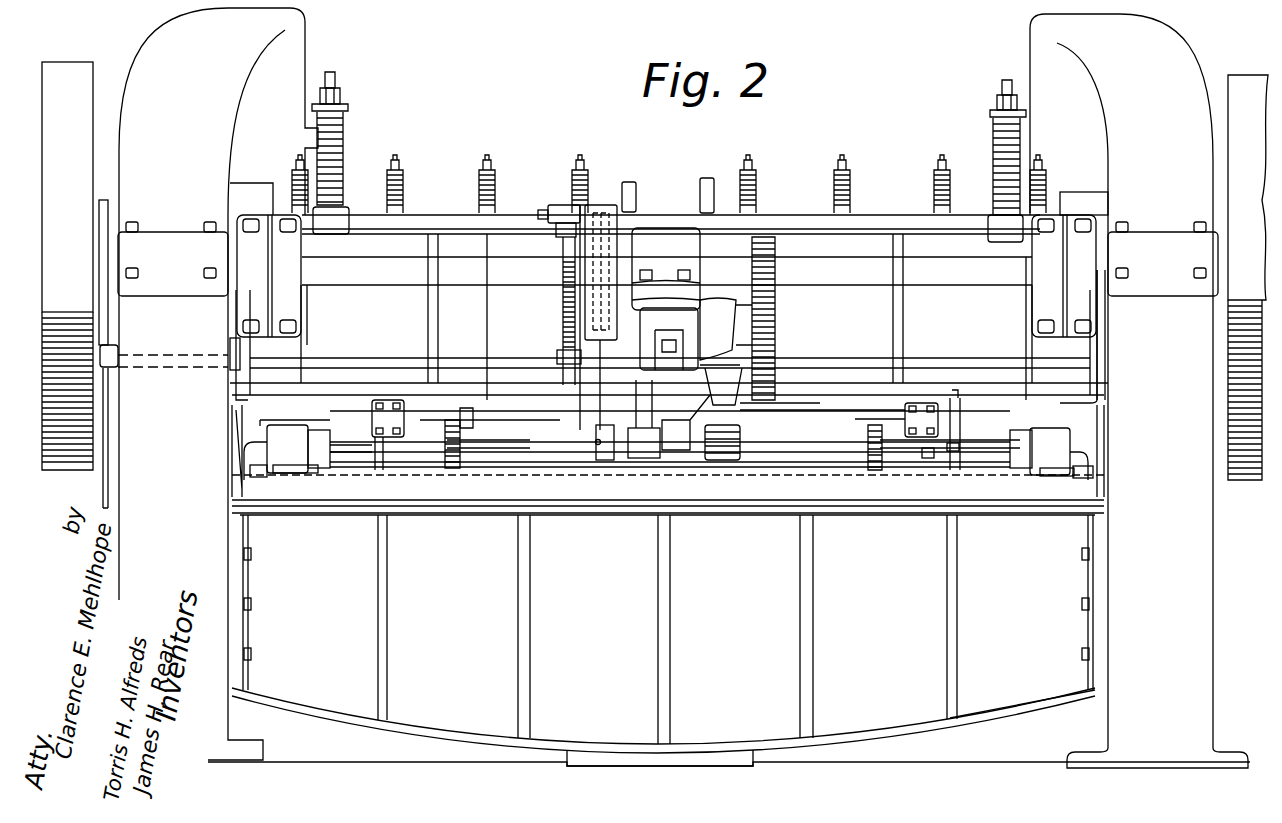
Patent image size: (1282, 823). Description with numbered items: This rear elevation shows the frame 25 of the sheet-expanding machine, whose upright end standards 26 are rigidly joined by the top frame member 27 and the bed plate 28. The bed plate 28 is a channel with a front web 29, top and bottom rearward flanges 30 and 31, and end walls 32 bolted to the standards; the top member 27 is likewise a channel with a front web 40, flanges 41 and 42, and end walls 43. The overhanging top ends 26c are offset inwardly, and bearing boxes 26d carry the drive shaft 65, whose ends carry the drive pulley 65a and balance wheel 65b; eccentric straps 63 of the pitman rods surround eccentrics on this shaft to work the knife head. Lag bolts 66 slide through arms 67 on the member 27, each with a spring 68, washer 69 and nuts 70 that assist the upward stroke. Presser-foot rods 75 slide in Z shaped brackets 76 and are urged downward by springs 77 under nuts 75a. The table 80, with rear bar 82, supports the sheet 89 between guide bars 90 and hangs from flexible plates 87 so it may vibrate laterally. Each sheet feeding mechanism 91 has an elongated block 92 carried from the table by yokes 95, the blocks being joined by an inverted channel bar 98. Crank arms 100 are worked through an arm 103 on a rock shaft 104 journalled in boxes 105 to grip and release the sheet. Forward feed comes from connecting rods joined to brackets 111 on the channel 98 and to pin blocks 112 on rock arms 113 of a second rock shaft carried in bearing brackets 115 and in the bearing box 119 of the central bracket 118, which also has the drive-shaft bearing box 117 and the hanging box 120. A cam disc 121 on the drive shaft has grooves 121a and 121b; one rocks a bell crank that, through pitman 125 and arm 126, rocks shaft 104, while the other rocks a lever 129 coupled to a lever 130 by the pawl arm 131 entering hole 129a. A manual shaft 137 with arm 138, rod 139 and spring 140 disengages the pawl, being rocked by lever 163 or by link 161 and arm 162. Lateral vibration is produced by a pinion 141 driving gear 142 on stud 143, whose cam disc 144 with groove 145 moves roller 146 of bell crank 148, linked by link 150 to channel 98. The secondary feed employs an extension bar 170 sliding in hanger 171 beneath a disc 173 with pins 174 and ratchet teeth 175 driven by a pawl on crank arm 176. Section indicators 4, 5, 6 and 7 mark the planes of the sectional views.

The section line 4- 4 is at (988, 373).
The section line 5- 5 is at (490, 212).
The section line 6- 6 is at (617, 205).
The section line 7- 7 is at (847, 533).
The frame 25 is at (333, 732).
The end standards 26 is at (684, 388).
The overhanging top ends of end standards 26c is at (292, 92).
The bearing boxes 26d is at (668, 259).
The top connecting frame member 27 is at (505, 212).
The bottom connecting frame member or bed plate 28 is at (563, 739).
The front web 29 is at (667, 629).
The top flange 30 is at (505, 520).
The bottom flange 31 is at (980, 715).
The end walls 32 is at (245, 630).
The front web 40 is at (666, 317).
The top flange 41 is at (635, 306).
The bottom flange 42 is at (505, 410).
The end walls 43 is at (232, 390).
The eccentric strap 63 is at (666, 276).
The drive shaft 65 is at (667, 271).
The drive pulley 65a is at (1248, 277).
The balance wheel 65b is at (75, 266).
The lag bolts 66 is at (336, 78).
The arms or straps 67 is at (346, 212).
The expansion coiled spring 68 is at (343, 130).
The washer 69 is at (348, 108).
The nuts 70 is at (341, 95).
The vertical rods or bolts 75 is at (485, 160).
The nuts 75a is at (484, 208).
The Z shaped brackets 76 is at (482, 180).
The expansion coiled springs 77 is at (485, 196).
The table 80 is at (750, 502).
The rear bar 82 is at (722, 497).
The rear flexible plate 87 is at (232, 443).
The metallic sheet 89 is at (810, 478).
The guide bars 90 is at (250, 473).
The sheet feeding mechanism 91 is at (288, 420).
The elongated block 92 is at (290, 478).
The U shaped yokes 95 is at (244, 460).
The inverted channel bar 98 is at (524, 467).
The crank arm 100 is at (312, 478).
The arm 103 is at (320, 430).
The rock shaft 104 is at (340, 440).
The boxes 105 is at (670, 450).
The brackets 111 is at (985, 472).
The pin blocks 112 is at (962, 443).
The rock arms 113 is at (380, 470).
The bearing brackets 115 is at (404, 394).
The bearing box 117 is at (666, 269).
The bracket 118 is at (669, 339).
The second bearing box 119 is at (676, 440).
The hanging box 120 is at (644, 458).
The cam disc 121 is at (608, 208).
The cam groove 121a is at (590, 210).
The cam groove 121b is at (640, 212).
The pitman or connecting rod 125 is at (600, 410).
The arm 126 is at (597, 442).
The lever 129 is at (563, 298).
The hole 129a is at (560, 230).
The second lever 130 is at (550, 218).
The pawl arm 131 is at (565, 240).
The shaft 137 is at (393, 358).
The arm 138 is at (557, 355).
The rod 139 is at (562, 365).
The expansion coiled spring 140 is at (563, 322).
The gear pinion 141 is at (778, 242).
The gear 142 is at (752, 352).
The stud 143 is at (778, 328).
The cam disc 144 is at (755, 307).
The peripheral cam groove 145 is at (725, 300).
The roller 146 is at (745, 362).
The bell crank rocking lever 148 is at (727, 403).
The link 150 is at (755, 460).
The link 161 is at (108, 428).
The arm 162 is at (115, 367).
The lever 163 is at (232, 345).
The extension bar 170 is at (448, 470).
The hanger 171 is at (470, 418).
The disc 173 is at (455, 418).
The pins 174 is at (862, 425).
The ratchet teeth 175 is at (518, 447).
The crank arm 176 is at (895, 455).